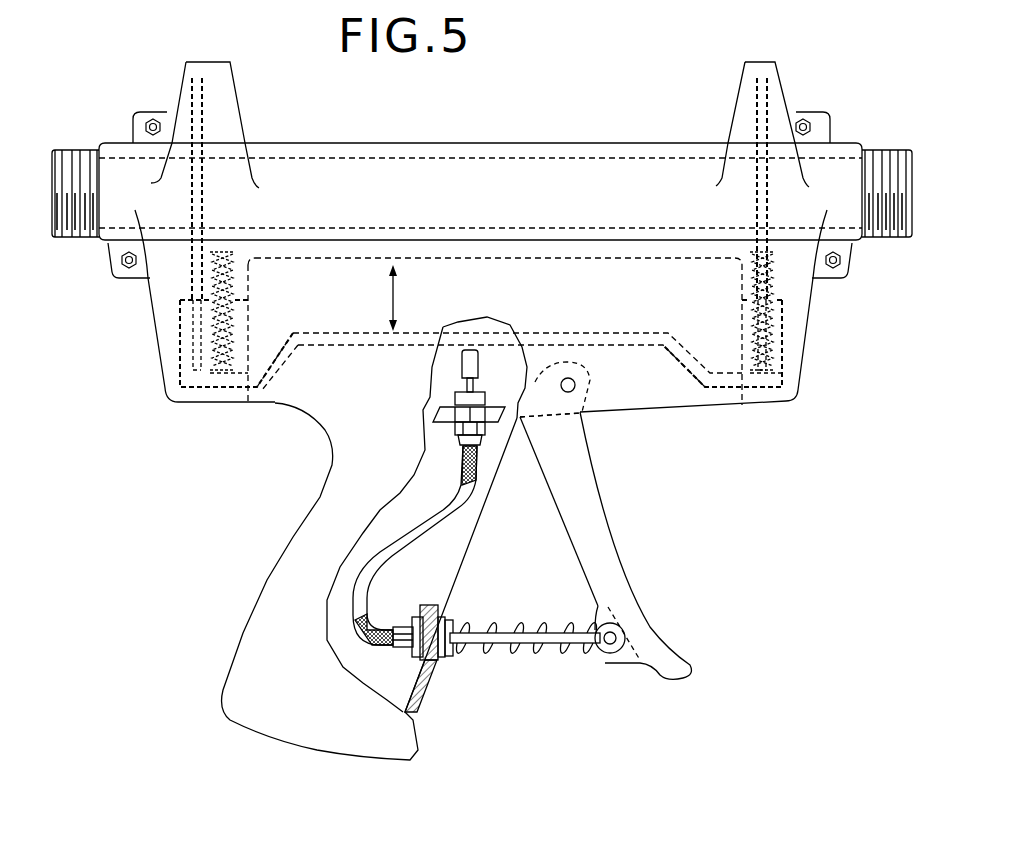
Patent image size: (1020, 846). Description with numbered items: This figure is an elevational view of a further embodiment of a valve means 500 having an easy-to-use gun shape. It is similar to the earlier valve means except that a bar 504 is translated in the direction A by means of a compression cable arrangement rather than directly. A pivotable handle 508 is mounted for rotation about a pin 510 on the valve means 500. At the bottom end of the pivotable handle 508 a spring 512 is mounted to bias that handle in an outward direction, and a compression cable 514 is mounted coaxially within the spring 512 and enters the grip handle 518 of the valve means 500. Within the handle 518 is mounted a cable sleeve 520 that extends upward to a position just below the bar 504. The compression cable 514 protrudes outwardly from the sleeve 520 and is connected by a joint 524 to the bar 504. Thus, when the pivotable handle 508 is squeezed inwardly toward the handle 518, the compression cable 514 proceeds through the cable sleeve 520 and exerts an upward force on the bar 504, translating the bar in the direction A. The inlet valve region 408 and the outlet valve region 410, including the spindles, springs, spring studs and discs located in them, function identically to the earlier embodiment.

The valve means 500 is at (582, 133).
The inlet valve region 408 is at (204, 62).
The outlet valve region 410 is at (757, 62).
The bar 504 is at (590, 342).
The pivotable handle 508 is at (622, 590).
The pin 510 is at (575, 385).
The spring 512 is at (513, 653).
The compression cable 514 is at (557, 642).
The handle 518 is at (277, 603).
The cable sleeve 520 is at (417, 530).
The joint 524 is at (472, 348).